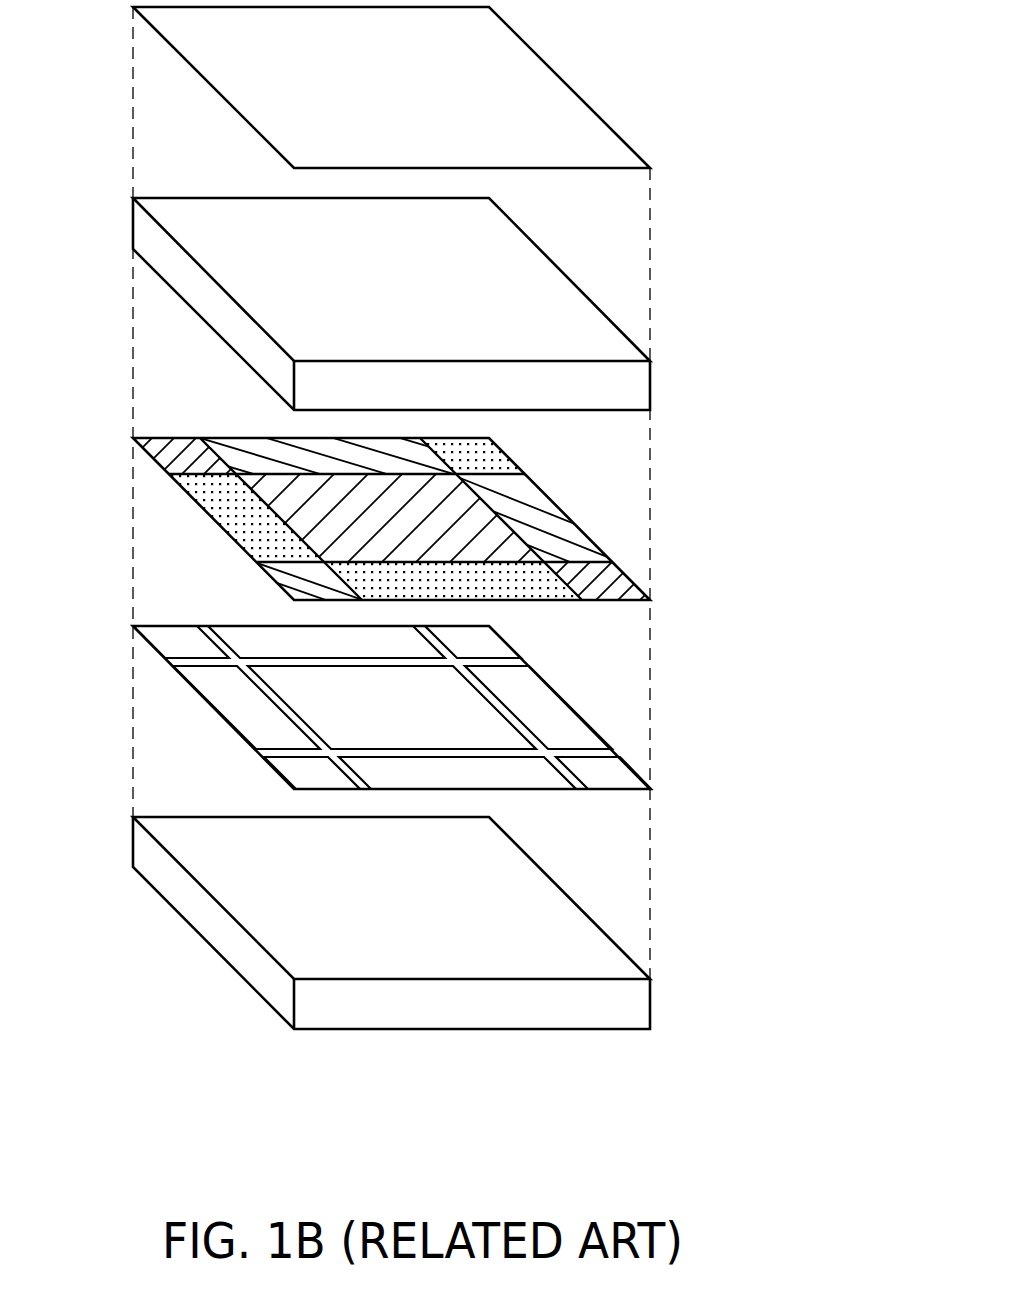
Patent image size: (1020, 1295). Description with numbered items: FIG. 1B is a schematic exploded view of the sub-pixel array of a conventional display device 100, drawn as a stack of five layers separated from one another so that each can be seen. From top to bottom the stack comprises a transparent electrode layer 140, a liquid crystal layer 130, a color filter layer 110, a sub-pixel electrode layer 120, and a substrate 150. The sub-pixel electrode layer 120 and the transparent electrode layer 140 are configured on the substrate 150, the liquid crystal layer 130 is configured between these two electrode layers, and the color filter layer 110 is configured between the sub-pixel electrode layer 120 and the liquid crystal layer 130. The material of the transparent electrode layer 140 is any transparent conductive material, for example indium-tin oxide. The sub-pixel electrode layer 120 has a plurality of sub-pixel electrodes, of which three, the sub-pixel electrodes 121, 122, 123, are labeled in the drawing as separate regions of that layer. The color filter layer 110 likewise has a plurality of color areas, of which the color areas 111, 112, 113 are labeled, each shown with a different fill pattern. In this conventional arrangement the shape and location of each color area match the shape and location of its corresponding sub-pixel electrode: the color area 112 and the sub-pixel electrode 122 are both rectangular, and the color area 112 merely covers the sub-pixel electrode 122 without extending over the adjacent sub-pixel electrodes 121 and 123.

The display device 100 is at (605, 1067).
The color filter layer 110 is at (401, 487).
The color area 111 is at (230, 527).
The color area 112 is at (427, 494).
The color area 113 is at (545, 524).
The sub-pixel electrode layer 120 is at (402, 701).
The sub-pixel electrode 121 is at (220, 692).
The sub-pixel electrode 122 is at (447, 693).
The sub-pixel electrode 123 is at (557, 722).
The liquid crystal layer 130 is at (650, 382).
The transparent electrode layer 140 is at (597, 108).
The substrate 150 is at (650, 1003).